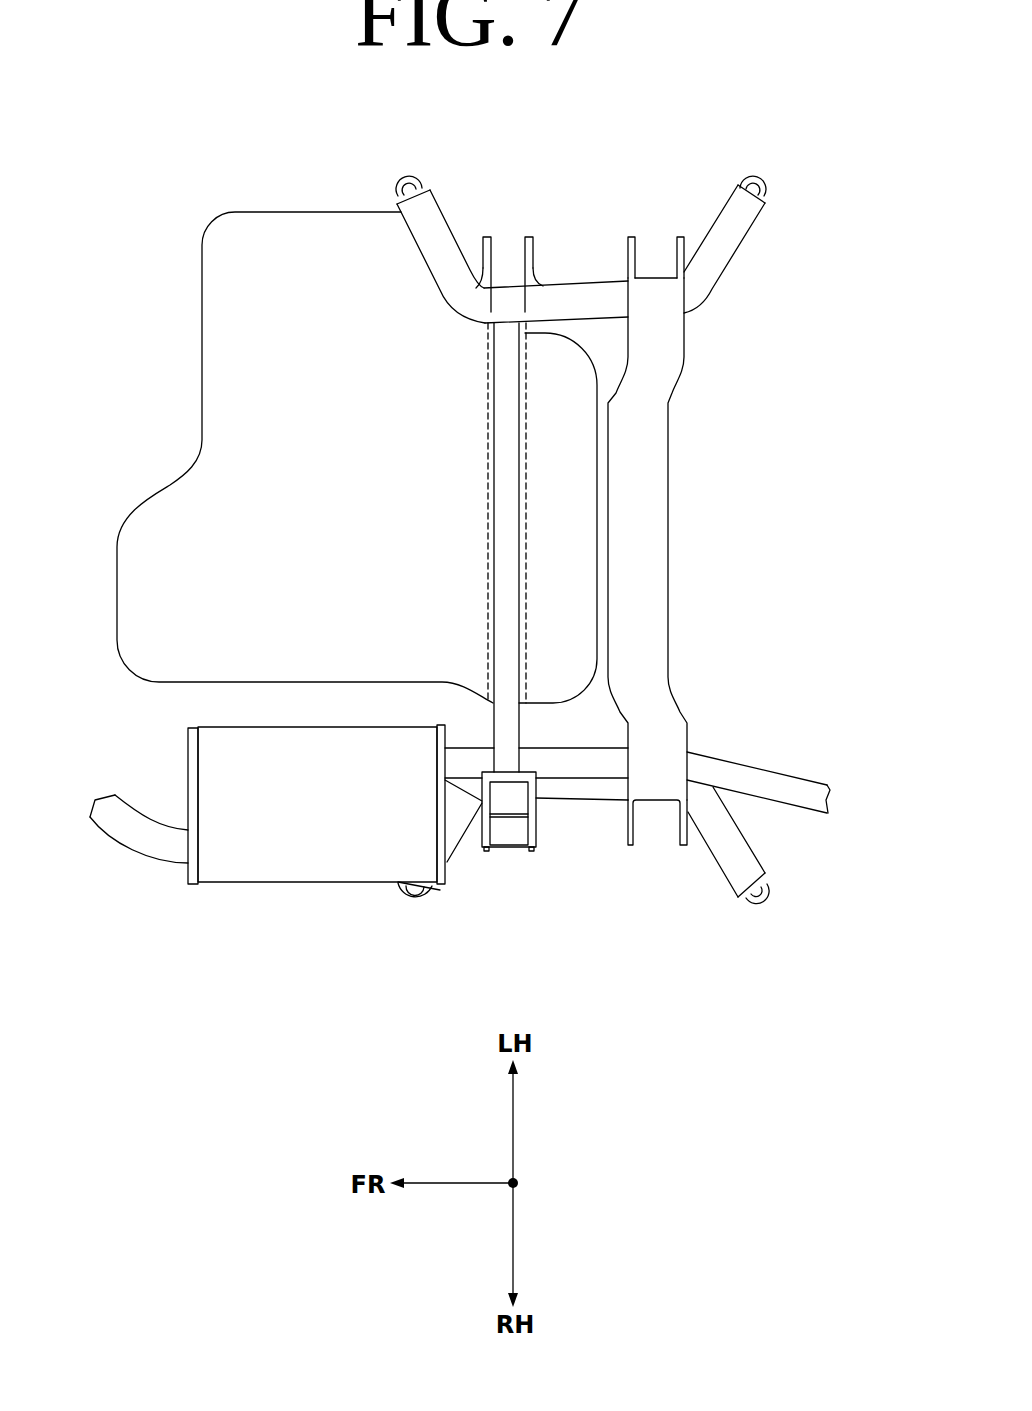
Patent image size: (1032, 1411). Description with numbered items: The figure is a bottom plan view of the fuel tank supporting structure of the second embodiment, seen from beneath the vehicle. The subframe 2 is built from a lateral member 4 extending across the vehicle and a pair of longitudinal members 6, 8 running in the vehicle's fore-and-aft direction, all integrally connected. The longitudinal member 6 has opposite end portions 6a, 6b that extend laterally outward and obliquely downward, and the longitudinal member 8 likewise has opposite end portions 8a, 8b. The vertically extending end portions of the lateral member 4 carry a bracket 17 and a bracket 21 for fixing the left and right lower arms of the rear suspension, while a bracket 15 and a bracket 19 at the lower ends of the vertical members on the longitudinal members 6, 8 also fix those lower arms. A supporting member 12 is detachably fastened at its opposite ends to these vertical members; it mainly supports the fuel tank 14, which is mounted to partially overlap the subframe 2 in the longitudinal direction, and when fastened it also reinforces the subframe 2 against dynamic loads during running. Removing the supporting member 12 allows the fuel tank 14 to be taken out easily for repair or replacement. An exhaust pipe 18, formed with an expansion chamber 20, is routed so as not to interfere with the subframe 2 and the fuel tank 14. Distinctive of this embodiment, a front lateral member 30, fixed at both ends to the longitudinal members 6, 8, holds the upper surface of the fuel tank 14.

The subframe 2 is at (692, 459).
The lateral member 4 is at (660, 537).
The longitudinal member 6 is at (575, 290).
The end portion 6a is at (425, 200).
The end portion 6b is at (747, 213).
The longitudinal member 8 is at (582, 792).
The end portion 8a is at (450, 845).
The end portion 8b is at (745, 865).
The supporting member 12 is at (504, 507).
The fuel tank 14 is at (262, 223).
The bracket 15 is at (486, 237).
The bracket 17 is at (632, 237).
The exhaust pipe 18 is at (145, 850).
The bracket 19 is at (483, 849).
The expansion chamber 20 is at (278, 872).
The bracket 21 is at (630, 848).
The front lateral member 30 is at (527, 722).